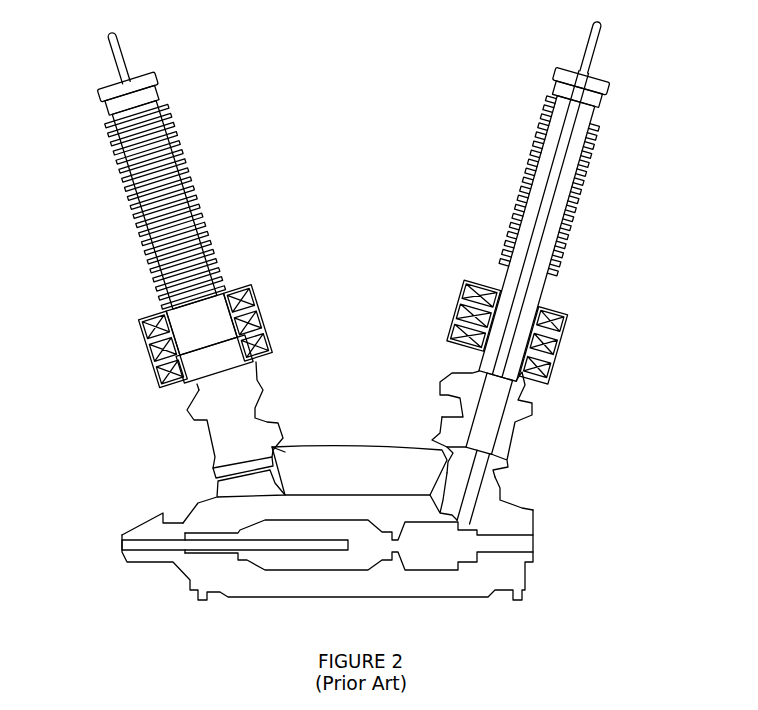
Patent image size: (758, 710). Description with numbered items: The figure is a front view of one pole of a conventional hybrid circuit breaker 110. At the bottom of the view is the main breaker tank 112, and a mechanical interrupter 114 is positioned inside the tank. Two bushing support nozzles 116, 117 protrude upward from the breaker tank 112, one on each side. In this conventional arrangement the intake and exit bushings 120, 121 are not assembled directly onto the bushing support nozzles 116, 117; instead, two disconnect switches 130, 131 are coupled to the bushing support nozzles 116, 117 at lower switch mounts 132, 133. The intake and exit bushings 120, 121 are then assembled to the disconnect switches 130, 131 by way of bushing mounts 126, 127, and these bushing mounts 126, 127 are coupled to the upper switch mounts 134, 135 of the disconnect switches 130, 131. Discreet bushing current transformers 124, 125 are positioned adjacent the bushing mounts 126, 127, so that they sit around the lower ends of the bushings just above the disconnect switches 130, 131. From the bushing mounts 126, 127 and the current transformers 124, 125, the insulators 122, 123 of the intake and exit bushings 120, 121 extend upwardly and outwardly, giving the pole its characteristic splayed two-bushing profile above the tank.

The conventional hybrid circuit breaker 110 is at (356, 49).
The main breaker tank 112 is at (318, 495).
The mechanical interrupter 114 is at (352, 570).
The bushing support nozzle 116 is at (215, 477).
The bushing support nozzle 117 is at (498, 483).
The intake bushing 120 is at (178, 108).
The exit bushing 121 is at (541, 98).
The insulator 122 is at (140, 173).
The insulator 123 is at (580, 198).
The current transformer 124 is at (155, 320).
The current transformer 125 is at (567, 307).
The bushing mount 126 is at (215, 305).
The bushing mount 127 is at (488, 340).
The disconnect switch 130 is at (267, 393).
The disconnect switch 131 is at (452, 373).
The lower switch mount 132 is at (274, 446).
The lower switch mount 133 is at (437, 440).
The upper switch mount 134 is at (197, 393).
The upper switch mount 135 is at (523, 377).